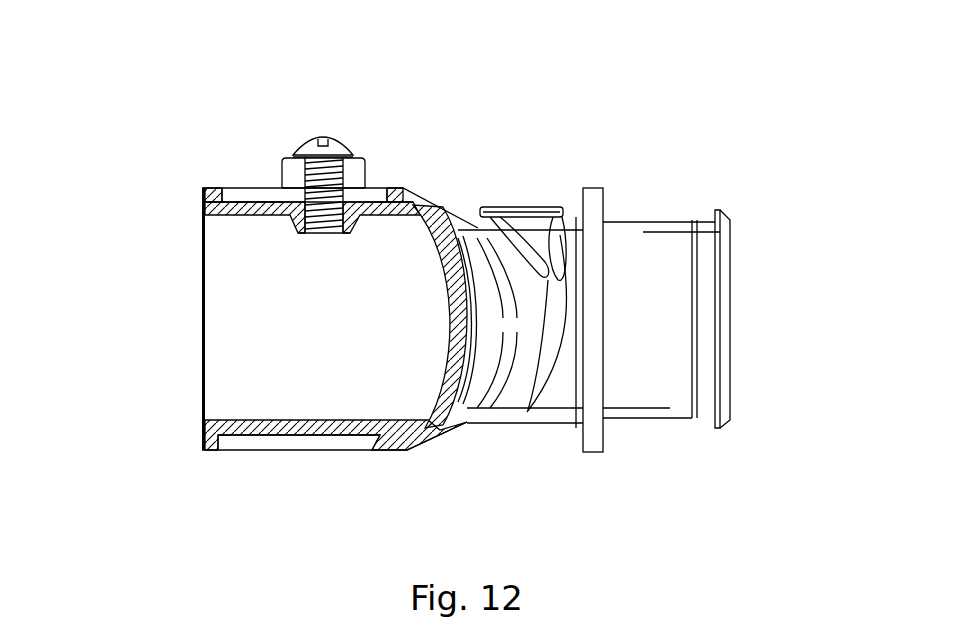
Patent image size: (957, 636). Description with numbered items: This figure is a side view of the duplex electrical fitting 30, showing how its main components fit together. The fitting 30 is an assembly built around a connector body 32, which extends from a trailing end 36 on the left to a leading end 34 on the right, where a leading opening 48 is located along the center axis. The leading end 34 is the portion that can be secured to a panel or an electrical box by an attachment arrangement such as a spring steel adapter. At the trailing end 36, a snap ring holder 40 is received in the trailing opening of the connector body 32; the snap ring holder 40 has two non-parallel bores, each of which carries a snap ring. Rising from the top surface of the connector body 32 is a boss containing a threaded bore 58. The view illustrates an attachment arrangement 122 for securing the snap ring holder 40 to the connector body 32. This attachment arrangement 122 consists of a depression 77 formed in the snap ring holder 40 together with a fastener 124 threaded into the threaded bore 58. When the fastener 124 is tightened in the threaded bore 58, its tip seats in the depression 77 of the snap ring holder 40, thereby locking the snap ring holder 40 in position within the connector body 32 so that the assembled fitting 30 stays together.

The duplex electrical fitting 30 is at (150, 149).
The connector body 32 is at (475, 423).
The leading end 34 is at (732, 318).
The trailing end 36 is at (200, 320).
The snap ring holder 40 is at (267, 437).
The leading opening 48 is at (752, 355).
The threaded bore 58 is at (305, 178).
The depression 77 is at (318, 233).
The attachment arrangement 122 is at (376, 165).
The fastener 124 is at (330, 137).